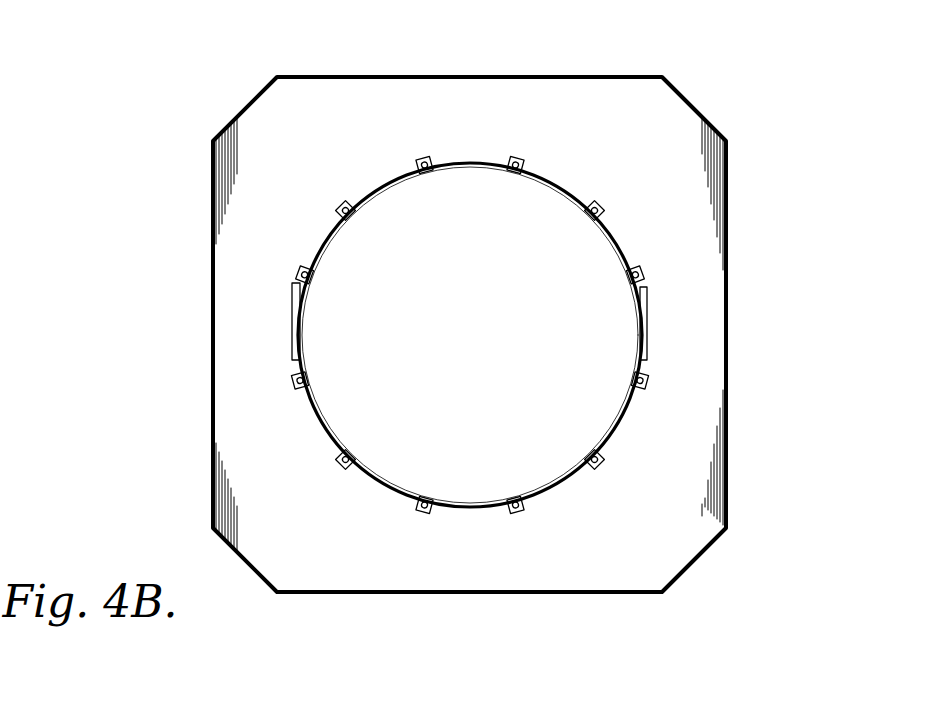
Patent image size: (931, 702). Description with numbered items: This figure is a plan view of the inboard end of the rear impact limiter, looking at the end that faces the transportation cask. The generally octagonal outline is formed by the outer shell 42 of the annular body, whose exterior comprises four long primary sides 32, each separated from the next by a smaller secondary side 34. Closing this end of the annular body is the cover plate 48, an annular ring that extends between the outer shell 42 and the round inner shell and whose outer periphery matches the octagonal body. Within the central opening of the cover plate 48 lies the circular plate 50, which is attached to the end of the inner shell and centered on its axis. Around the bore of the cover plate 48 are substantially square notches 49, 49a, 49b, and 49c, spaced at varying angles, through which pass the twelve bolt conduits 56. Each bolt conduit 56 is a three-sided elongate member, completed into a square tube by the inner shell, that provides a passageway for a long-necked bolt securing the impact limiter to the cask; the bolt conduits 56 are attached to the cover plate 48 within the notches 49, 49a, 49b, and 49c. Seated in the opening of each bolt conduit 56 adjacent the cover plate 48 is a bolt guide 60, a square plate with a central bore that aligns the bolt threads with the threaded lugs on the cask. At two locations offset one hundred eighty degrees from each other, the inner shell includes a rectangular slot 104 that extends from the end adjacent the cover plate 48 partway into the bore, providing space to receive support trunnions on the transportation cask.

The primary side 32 is at (478, 77).
The secondary side 34 is at (243, 110).
The outer shell 42 is at (100, 383).
The cover plate 48 is at (693, 357).
The notch 49 is at (426, 173).
The notch 49a is at (310, 378).
The notch 49b is at (315, 278).
The notch 49c is at (355, 218).
The circular plate 50 is at (450, 350).
The bolt conduit 56 is at (422, 157).
The bolt guide 60 is at (418, 165).
The rectangular slot 104 is at (291, 318).